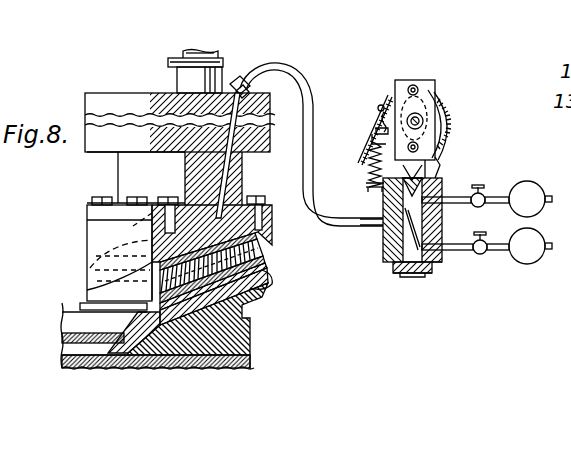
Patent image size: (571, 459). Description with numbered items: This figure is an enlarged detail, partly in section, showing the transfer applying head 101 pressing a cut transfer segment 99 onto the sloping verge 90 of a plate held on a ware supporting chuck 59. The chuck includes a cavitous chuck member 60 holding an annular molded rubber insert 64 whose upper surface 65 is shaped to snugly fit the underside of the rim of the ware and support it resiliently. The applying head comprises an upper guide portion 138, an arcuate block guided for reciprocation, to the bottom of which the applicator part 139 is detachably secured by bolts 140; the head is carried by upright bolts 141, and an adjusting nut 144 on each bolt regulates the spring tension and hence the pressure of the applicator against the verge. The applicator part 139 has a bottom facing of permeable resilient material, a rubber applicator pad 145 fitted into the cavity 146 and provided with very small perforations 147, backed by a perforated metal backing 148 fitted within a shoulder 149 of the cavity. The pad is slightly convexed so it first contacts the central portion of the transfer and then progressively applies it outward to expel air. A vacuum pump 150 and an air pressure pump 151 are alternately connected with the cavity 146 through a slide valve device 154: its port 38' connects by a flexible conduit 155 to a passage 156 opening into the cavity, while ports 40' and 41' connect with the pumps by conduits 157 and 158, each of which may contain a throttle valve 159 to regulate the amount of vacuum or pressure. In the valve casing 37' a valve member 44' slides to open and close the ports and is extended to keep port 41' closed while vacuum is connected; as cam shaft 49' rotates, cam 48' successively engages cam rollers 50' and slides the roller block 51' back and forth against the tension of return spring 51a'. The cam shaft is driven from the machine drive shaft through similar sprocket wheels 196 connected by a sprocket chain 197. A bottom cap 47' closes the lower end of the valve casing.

The upper guide portion 138 is at (95, 144).
The upright bolts 141 is at (182, 55).
The adjusting nut 144 is at (177, 75).
The transfer applying head 101 is at (270, 81).
The passage 156 is at (230, 167).
The bolts 140 is at (160, 191).
The applicator part 139 is at (93, 238).
The perforated metal backing 148 is at (107, 268).
The shoulder 149 is at (84, 291).
The transfer segments 99 is at (157, 336).
The cavity 146 is at (267, 235).
The applicator pad 145 is at (264, 253).
The perforations 147 is at (268, 265).
The verge 90 is at (274, 281).
The upper surface 65 is at (262, 296).
The chuck member 60 is at (250, 337).
The rubber insert 64 is at (250, 358).
The ware supporting chuck 59 is at (259, 378).
The valve casing 37' is at (387, 178).
The roller block 51' is at (395, 71).
The cam rollers 50' is at (394, 117).
The cam shaft 49' is at (447, 117).
The cam 48' is at (455, 117).
The sprocket wheels 196 is at (387, 112).
The sprocket chain 197 is at (377, 112).
The flexible conduit 155 is at (372, 129).
The return spring 51a' is at (350, 183).
The valve member 44' is at (463, 150).
The slide valve device 154 is at (445, 170).
The port 40' is at (465, 185).
The conduit 157 is at (508, 190).
The vacuum pump 150 is at (535, 184).
The throttle valve 159 is at (490, 224).
The air pressure pump 151 is at (526, 266).
The conduit 158 is at (500, 232).
The port 38' is at (362, 248).
The bottom cap 47' is at (393, 295).
The port 41' is at (457, 269).